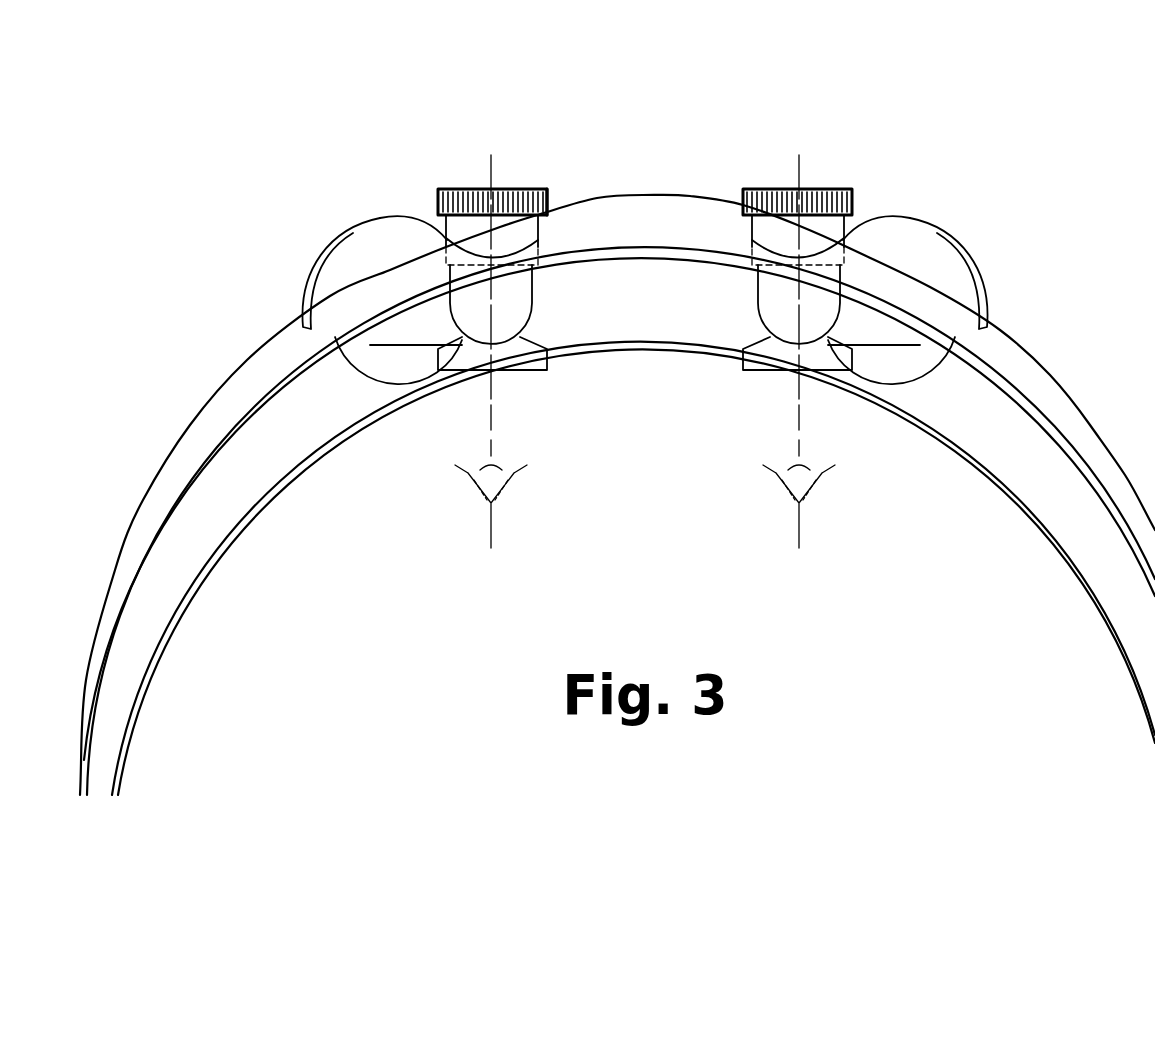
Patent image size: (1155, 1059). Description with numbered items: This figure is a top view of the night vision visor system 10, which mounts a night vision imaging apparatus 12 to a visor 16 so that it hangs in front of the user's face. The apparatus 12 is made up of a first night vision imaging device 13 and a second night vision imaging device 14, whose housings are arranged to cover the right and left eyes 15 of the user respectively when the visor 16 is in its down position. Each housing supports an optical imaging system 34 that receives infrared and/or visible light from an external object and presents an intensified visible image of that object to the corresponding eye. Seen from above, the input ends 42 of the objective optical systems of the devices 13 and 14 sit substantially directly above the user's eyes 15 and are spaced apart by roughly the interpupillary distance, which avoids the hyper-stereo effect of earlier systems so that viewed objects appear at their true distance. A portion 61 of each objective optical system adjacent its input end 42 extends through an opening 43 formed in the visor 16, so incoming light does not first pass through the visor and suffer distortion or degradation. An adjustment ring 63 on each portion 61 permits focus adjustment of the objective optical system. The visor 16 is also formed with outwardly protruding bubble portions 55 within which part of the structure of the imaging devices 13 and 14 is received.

The night vision visor system 10 is at (130, 351).
The night vision imaging apparatus 12 is at (676, 98).
The first night vision imaging device 13 is at (920, 177).
The second night vision imaging device 14 is at (370, 177).
The eyes 15 is at (444, 499).
The visor 16 is at (150, 498).
The optical imaging system 34 is at (512, 232).
The input end 42 is at (521, 188).
The opening 43 is at (549, 212).
The bubble portion 55 is at (332, 255).
The portion of objective optical system 61 is at (447, 240).
The adjustment ring 63 is at (440, 188).